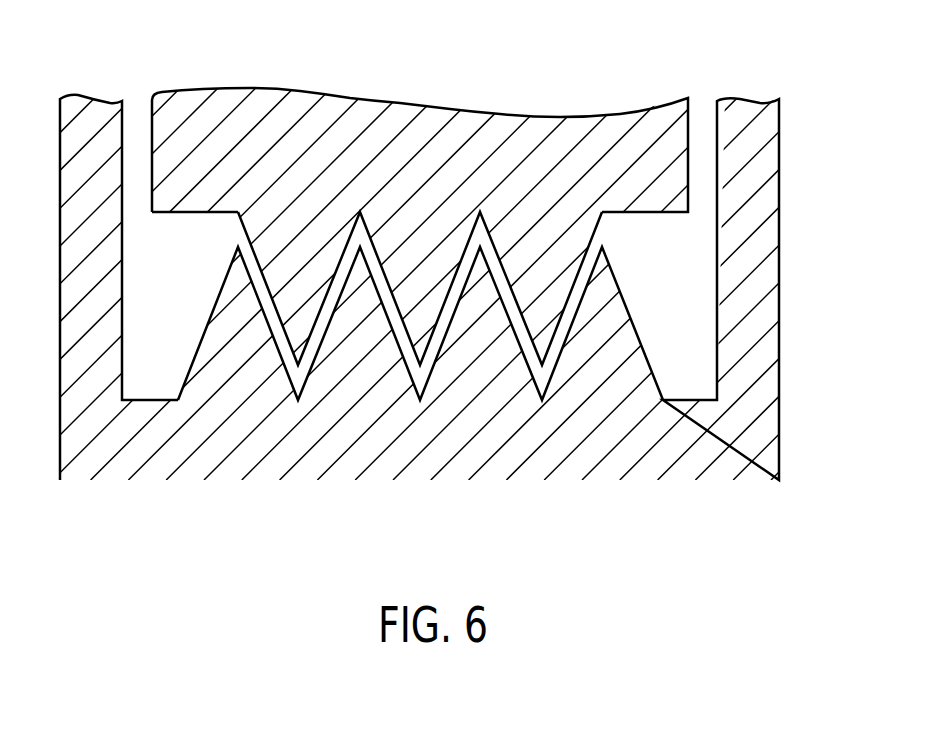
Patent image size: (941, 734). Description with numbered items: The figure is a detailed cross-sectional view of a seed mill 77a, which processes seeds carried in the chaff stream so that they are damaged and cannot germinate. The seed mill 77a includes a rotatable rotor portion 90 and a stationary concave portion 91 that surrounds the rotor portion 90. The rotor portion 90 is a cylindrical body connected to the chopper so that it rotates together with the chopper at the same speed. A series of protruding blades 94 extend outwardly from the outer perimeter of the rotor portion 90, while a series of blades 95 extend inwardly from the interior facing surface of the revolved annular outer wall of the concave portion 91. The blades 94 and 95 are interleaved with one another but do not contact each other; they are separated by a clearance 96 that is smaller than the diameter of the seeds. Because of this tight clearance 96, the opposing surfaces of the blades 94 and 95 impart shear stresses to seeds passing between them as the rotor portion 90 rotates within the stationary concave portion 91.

The seal assembly 77a is at (470, 285).
The rotor portion 90 is at (573, 148).
The concave portion 91 is at (700, 453).
The blades 94 is at (297, 287).
The blades 95 is at (362, 365).
The clearance 96 is at (420, 282).